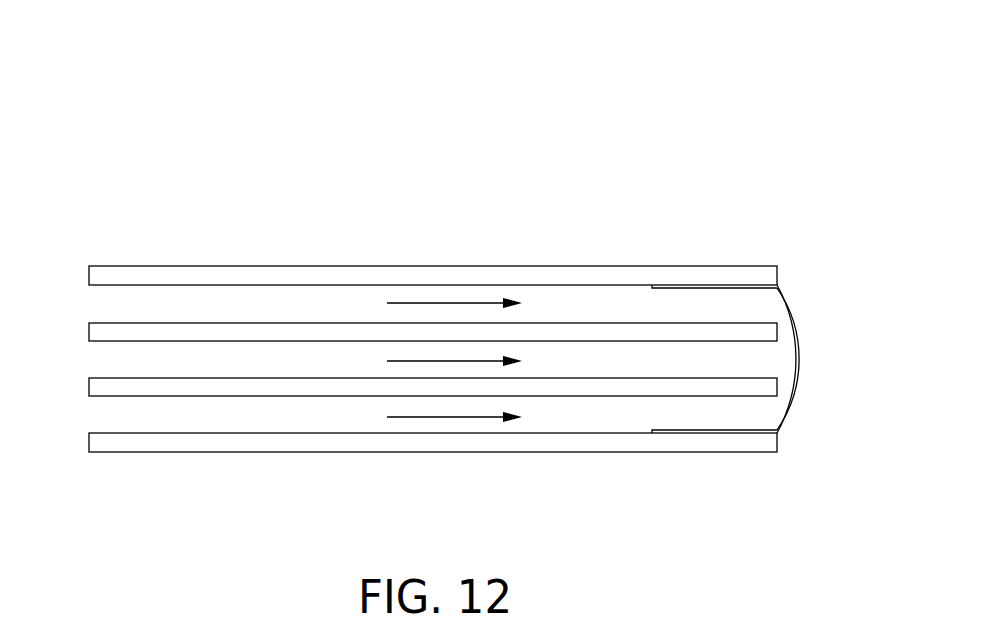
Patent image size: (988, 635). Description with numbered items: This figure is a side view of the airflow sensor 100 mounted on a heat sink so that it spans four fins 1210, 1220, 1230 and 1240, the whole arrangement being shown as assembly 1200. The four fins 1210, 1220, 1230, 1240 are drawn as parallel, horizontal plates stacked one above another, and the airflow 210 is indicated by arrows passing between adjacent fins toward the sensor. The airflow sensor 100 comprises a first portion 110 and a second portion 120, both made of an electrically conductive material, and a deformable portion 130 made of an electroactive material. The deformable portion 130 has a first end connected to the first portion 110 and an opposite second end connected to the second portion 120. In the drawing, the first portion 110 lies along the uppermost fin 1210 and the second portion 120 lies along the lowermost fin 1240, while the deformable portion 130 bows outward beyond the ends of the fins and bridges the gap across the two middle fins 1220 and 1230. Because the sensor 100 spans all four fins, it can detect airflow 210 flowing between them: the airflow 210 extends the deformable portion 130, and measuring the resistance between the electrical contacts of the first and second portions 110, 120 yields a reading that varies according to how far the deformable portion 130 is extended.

The stacked optical assembly 1200 is at (843, 120).
The fin 1210 is at (89, 274).
The fin 1220 is at (89, 332).
The fin 1230 is at (89, 387).
The fin 1240 is at (89, 442).
The airflow sensor 100 is at (809, 298).
The first portion 110 is at (712, 285).
The second portion 120 is at (710, 433).
The deformable portion 130 is at (793, 402).
The airflow 210 is at (447, 417).